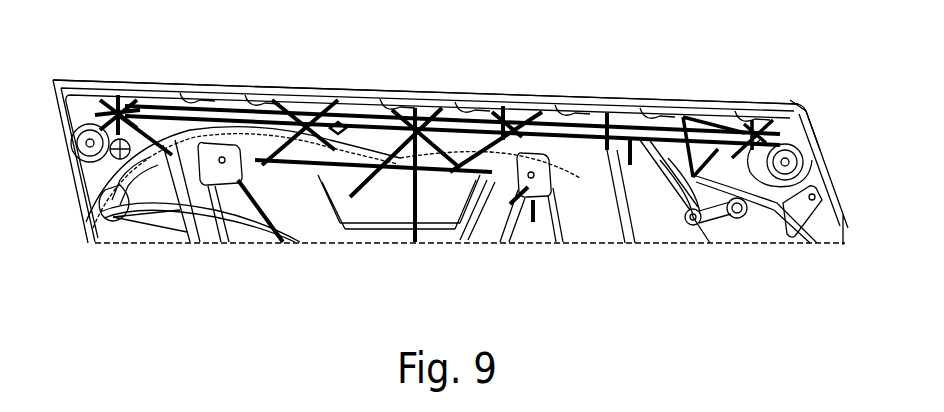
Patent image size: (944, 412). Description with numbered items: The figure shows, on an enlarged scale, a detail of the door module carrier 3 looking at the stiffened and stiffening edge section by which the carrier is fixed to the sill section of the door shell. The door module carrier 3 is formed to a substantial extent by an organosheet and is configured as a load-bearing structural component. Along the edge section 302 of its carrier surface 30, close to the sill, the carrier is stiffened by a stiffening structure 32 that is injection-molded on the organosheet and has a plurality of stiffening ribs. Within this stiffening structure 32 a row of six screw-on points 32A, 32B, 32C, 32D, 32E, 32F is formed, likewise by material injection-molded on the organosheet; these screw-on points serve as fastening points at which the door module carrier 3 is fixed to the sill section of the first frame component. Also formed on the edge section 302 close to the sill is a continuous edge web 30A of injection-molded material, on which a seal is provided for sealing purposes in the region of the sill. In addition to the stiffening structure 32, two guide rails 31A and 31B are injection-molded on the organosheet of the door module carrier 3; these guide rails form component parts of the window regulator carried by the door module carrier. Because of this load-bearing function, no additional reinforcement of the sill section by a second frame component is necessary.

The door module carrier 3 is at (722, 270).
The carrier surface 30 is at (375, 248).
The edge web 30A is at (92, 80).
The edge section 302 is at (790, 102).
The guide rail 31A is at (595, 245).
The guide rail 31B is at (202, 245).
The stiffening structure 32 is at (503, 108).
The screw-on point 32A is at (123, 108).
The screw-on point 32B is at (300, 112).
The screw-on point 32C is at (415, 115).
The screw-on point 32D is at (522, 116).
The screw-on point 32E is at (612, 118).
The screw-on point 32F is at (760, 116).